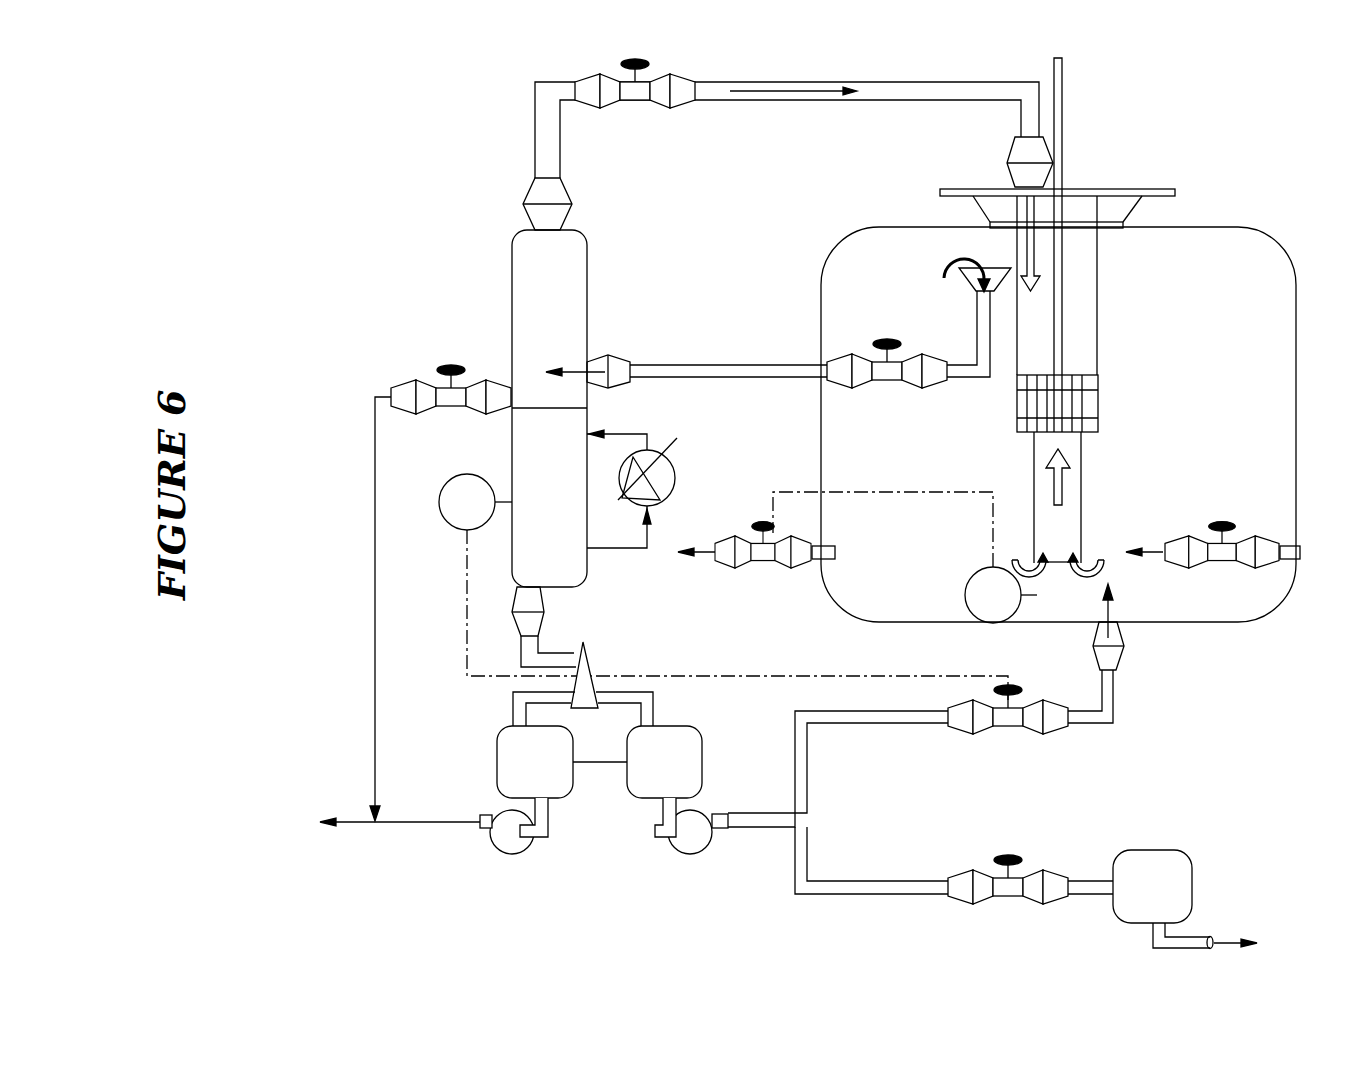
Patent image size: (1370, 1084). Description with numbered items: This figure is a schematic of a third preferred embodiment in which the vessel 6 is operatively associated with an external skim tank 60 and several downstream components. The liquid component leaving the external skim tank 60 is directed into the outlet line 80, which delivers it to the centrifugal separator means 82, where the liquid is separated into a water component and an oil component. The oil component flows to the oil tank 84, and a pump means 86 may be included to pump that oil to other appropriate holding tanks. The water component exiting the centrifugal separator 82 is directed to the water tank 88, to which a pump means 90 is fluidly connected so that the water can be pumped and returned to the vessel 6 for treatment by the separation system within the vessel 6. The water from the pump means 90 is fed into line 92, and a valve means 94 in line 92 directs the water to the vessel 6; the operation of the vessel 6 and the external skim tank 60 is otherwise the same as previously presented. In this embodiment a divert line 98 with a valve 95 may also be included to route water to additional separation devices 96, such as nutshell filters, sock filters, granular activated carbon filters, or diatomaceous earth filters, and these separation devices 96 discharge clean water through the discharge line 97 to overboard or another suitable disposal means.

The vessel 6 is at (1293, 268).
The external skim tank 60 is at (513, 268).
The outlet line 80 is at (533, 644).
The centrifugal separator means 82 is at (584, 668).
The oil tank 84 is at (513, 762).
The pump means 86 is at (504, 844).
The water tank 88 is at (665, 745).
The pump means 90 is at (683, 840).
The line 92 is at (802, 820).
The valve means 94 is at (1007, 727).
The valve 95 is at (1000, 903).
The additional separation devices 96 is at (1135, 893).
The discharge line 97 is at (1190, 937).
The divert line 98 is at (802, 840).